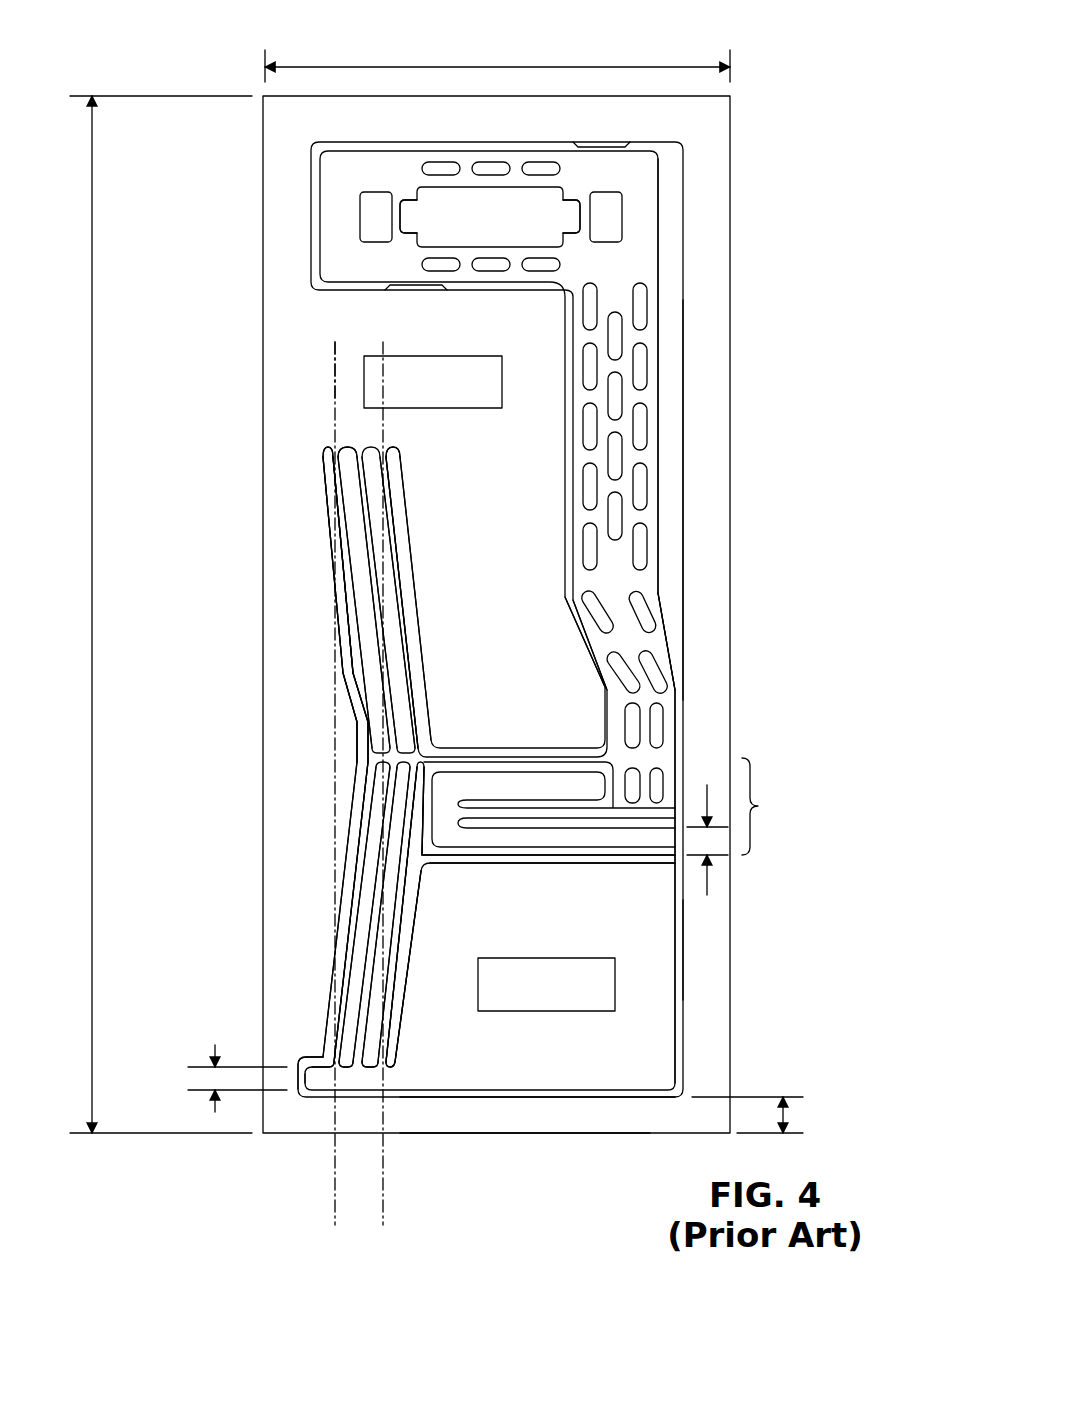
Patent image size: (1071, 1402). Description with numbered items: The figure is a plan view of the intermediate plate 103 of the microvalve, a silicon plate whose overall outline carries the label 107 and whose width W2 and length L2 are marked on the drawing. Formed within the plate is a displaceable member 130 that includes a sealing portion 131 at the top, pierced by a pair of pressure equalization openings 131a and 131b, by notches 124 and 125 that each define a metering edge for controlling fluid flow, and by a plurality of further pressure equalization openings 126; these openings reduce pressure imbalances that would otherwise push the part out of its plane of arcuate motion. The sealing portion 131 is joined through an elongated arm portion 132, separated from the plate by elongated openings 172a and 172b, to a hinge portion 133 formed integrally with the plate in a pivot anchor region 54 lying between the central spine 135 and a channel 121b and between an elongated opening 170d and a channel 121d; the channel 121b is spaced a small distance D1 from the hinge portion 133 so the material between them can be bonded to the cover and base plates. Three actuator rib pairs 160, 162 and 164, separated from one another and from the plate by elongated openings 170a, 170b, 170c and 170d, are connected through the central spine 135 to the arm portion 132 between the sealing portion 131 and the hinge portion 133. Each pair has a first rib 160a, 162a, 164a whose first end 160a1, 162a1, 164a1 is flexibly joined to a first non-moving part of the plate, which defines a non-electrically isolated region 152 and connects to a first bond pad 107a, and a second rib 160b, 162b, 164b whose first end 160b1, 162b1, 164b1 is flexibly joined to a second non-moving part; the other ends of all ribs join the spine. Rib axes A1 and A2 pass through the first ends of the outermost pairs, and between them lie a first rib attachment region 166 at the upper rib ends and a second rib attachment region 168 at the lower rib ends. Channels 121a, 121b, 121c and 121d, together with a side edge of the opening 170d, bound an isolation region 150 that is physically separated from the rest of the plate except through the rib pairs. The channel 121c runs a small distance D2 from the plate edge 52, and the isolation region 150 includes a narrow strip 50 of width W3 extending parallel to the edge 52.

The intermediate plate 103 is at (185, 50).
The frame plate 107 is at (636, 130).
The first bond pad 107a is at (478, 380).
The notch 124 is at (407, 217).
The notch 125 is at (567, 213).
The pressure equalization openings 126 is at (493, 170).
The displaceable member 130 is at (658, 478).
The sealing portion 131 is at (640, 175).
The pressure equalization opening 131a is at (367, 222).
The pressure equalization opening 131b is at (613, 223).
The elongated arm portion 132 is at (650, 553).
The hinge portion 133 is at (543, 815).
The central spine 135 is at (537, 760).
The isolation region 150 is at (647, 1018).
The non-electrically isolated region 152 is at (345, 340).
The actuator rib pair 160 is at (355, 520).
The actuator rib pair 162 is at (382, 547).
The actuator rib pair 164 is at (410, 578).
The first rib attachment region 166 is at (345, 528).
The second rib attachment region 168 is at (398, 1080).
The first rib 160a is at (345, 530).
The first rib 162a is at (372, 575).
The first rib 164a is at (400, 615).
The first end of first rib 160a1 is at (325, 450).
The first end of first rib 162a1 is at (357, 453).
The first end of first rib 164a1 is at (386, 447).
The second rib 160b is at (357, 858).
The second rib 162b is at (375, 902).
The second rib 164b is at (400, 940).
The first end of second rib 160b1 is at (335, 1072).
The first end of second rib 162b1 is at (358, 1075).
The first end of second rib 164b1 is at (390, 1068).
The elongated opening 170a is at (352, 722).
The elongated opening 170b is at (372, 818).
The elongated opening 170c is at (387, 972).
The elongated opening 170d is at (413, 888).
The elongated opening 172a is at (590, 652).
The elongated opening 172b is at (672, 628).
The channel 121a is at (305, 1080).
The channel 121b is at (615, 857).
The channel 121c is at (583, 1097).
The channel 121d is at (686, 958).
The narrow strip 50 is at (372, 1078).
The edge of intermediate plate 52 is at (523, 1135).
The pivot anchor region 54 is at (767, 806).
The first rib axis A1 is at (333, 795).
The second rib axis A2 is at (383, 795).
The width W2 is at (497, 57).
The width of narrow strip W3 is at (215, 1047).
The length L2 is at (94, 172).
The distance D1 is at (710, 882).
The distance D2 is at (787, 1114).